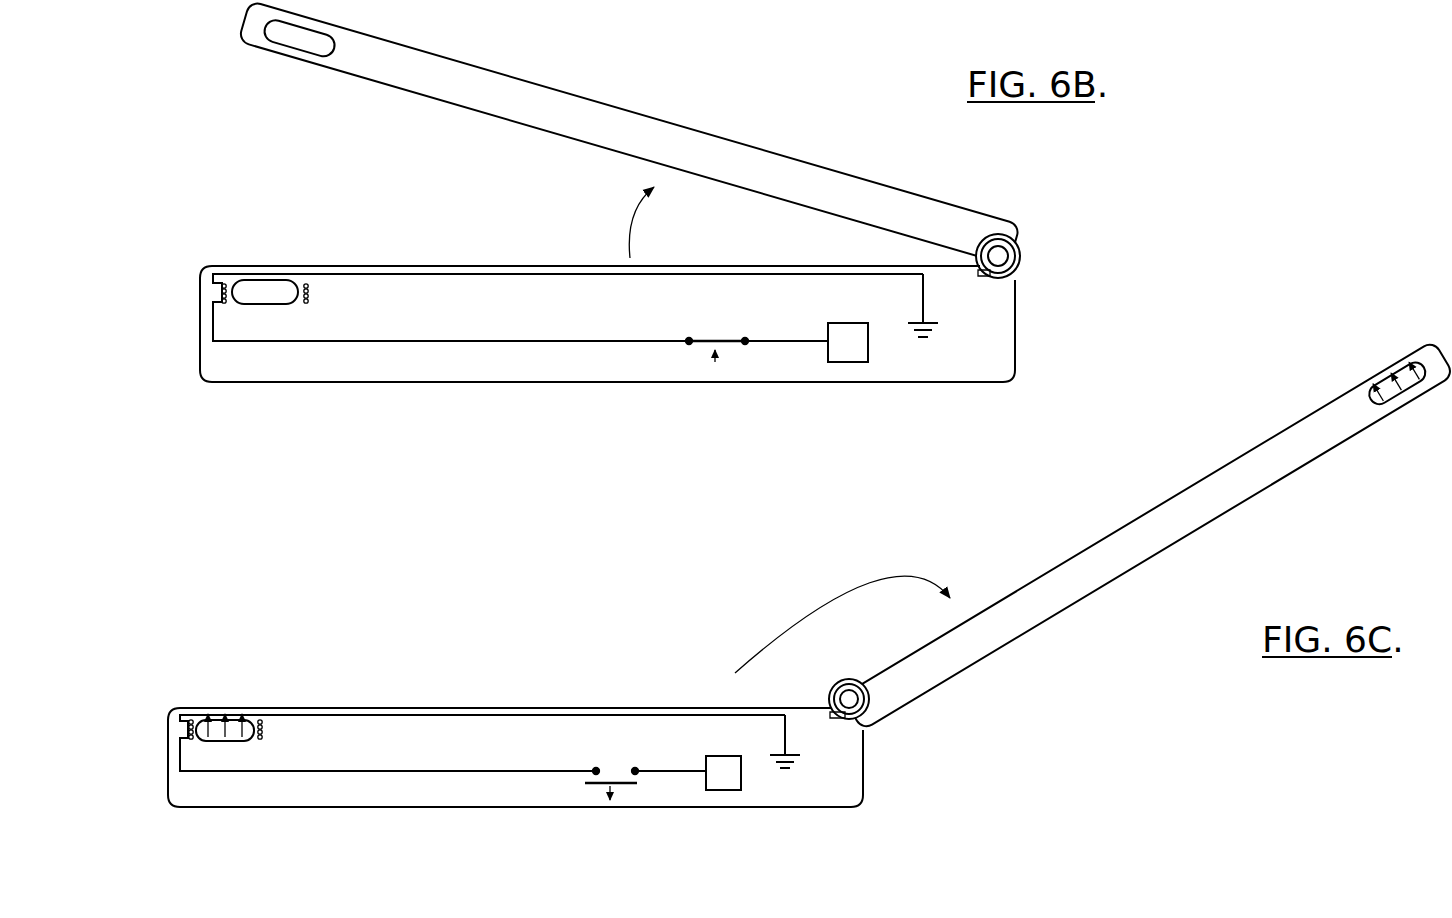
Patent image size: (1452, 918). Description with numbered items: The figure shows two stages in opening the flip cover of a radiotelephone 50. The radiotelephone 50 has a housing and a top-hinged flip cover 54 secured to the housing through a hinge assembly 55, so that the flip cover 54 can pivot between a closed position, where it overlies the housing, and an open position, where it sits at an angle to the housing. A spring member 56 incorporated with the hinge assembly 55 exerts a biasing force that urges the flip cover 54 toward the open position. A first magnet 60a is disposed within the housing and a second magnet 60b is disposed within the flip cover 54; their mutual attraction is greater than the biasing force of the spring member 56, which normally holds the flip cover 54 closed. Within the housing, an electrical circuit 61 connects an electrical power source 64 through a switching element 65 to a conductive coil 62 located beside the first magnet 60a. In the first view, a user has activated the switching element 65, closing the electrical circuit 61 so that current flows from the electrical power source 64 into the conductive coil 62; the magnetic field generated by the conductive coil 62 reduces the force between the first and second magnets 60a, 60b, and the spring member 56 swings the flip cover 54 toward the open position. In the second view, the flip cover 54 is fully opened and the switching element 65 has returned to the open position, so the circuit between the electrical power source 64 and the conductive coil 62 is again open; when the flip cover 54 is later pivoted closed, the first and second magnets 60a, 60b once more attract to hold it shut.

In FIG. 6B, the radiotelephone 50 is at (580, 73).
In FIG. 6B, the flip cover 54 is at (797, 151).
In FIG. 6C, the flip cover 54 is at (1058, 570).
In FIG. 6B, the hinge assembly 55 is at (1024, 266).
In FIG. 6C, the hinge assembly 55 is at (845, 677).
In FIG. 6B, the spring member 56 is at (1000, 235).
In FIG. 6C, the spring member 56 is at (866, 704).
In FIG. 6B, the first magnet 60a is at (240, 297).
In FIG. 6C, the first magnet 60a is at (232, 714).
In FIG. 6B, the second magnet 60b is at (270, 48).
In FIG. 6C, the second magnet 60b is at (1382, 372).
In FIG. 6B, the electrical circuit 61 is at (770, 349).
In FIG. 6C, the electrical circuit 61 is at (657, 784).
In FIG. 6B, the conductive coil 62 is at (218, 293).
In FIG. 6C, the conductive coil 62 is at (186, 729).
In FIG. 6B, the electrical power source 64 is at (845, 356).
In FIG. 6C, the electrical power source 64 is at (726, 790).
In FIG. 6B, the switching element 65 is at (697, 352).
In FIG. 6C, the switching element 65 is at (582, 791).